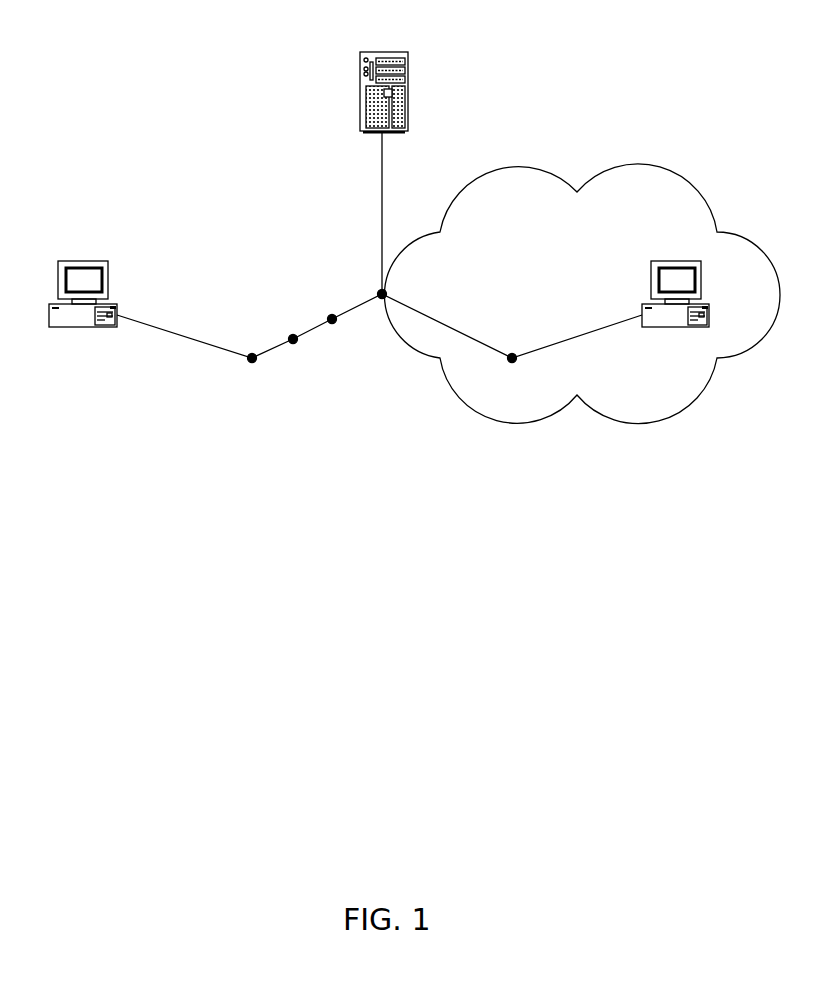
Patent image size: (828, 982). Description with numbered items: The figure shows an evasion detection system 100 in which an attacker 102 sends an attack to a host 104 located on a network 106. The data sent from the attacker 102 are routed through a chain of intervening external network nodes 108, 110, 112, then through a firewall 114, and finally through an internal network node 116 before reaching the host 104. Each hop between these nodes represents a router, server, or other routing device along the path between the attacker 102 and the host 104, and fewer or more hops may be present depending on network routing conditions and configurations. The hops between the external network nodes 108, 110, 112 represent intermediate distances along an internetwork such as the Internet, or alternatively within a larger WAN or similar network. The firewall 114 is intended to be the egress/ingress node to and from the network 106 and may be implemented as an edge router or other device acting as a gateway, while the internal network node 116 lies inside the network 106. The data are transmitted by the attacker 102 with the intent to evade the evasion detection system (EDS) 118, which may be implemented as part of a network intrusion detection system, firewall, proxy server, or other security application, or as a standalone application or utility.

The evasion detection system 100 is at (136, 682).
The attacker 102 is at (81, 261).
The host 104 is at (673, 261).
The network 106 is at (461, 193).
The external network node 108 is at (253, 354).
The external network node 110 is at (293, 335).
The external network node 112 is at (332, 315).
The firewall 114 is at (386, 294).
The internal network node 116 is at (512, 354).
The evasion detection system (EDS) 118 is at (382, 52).